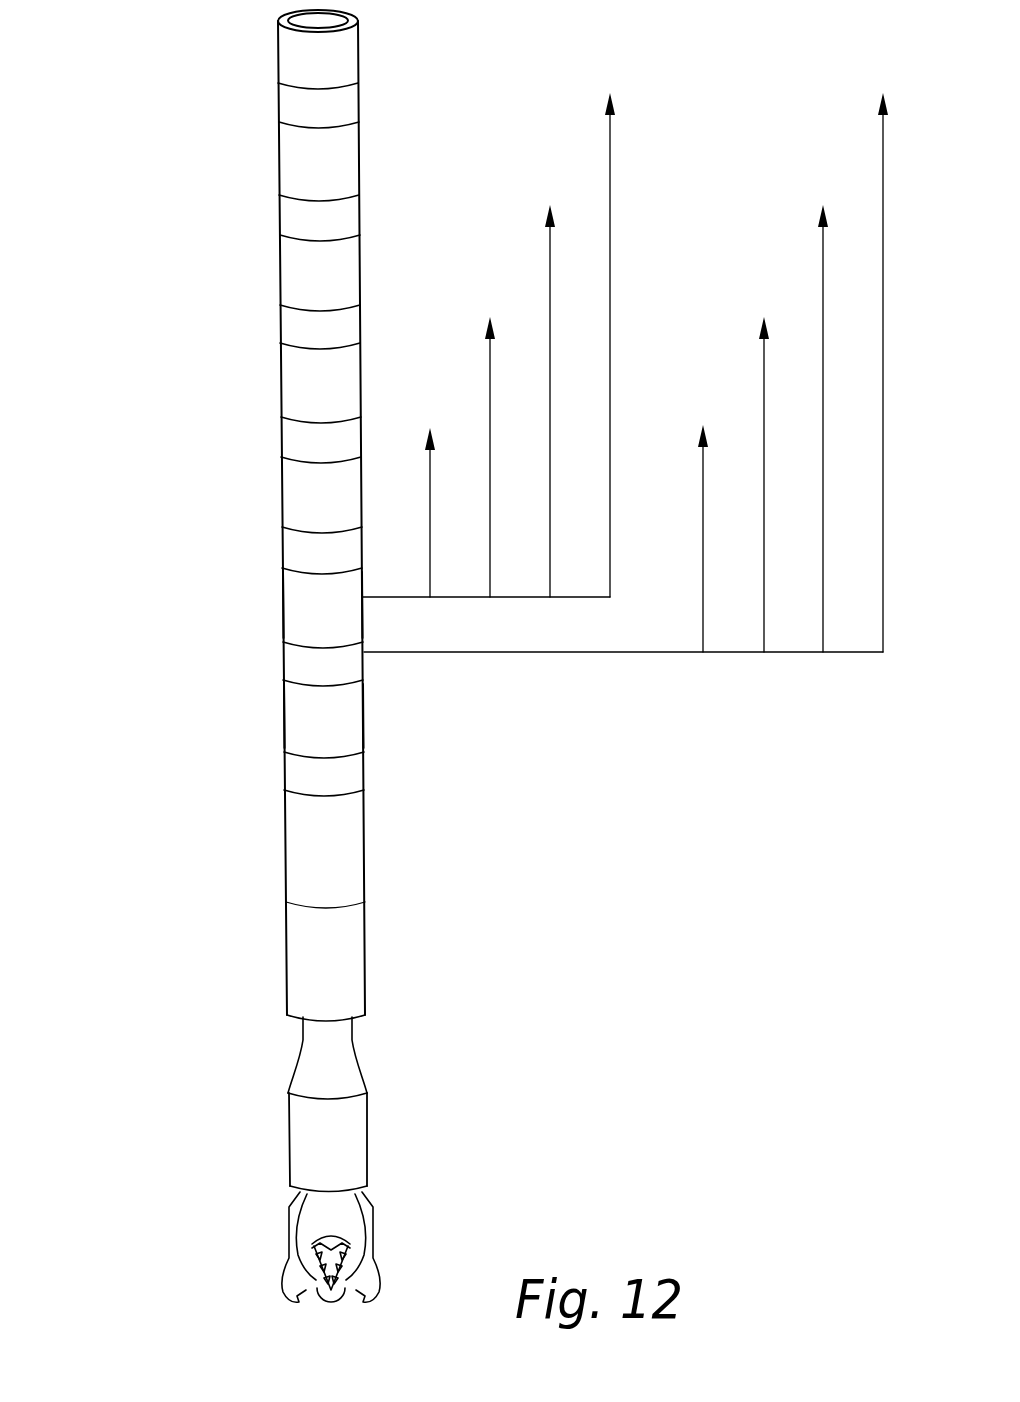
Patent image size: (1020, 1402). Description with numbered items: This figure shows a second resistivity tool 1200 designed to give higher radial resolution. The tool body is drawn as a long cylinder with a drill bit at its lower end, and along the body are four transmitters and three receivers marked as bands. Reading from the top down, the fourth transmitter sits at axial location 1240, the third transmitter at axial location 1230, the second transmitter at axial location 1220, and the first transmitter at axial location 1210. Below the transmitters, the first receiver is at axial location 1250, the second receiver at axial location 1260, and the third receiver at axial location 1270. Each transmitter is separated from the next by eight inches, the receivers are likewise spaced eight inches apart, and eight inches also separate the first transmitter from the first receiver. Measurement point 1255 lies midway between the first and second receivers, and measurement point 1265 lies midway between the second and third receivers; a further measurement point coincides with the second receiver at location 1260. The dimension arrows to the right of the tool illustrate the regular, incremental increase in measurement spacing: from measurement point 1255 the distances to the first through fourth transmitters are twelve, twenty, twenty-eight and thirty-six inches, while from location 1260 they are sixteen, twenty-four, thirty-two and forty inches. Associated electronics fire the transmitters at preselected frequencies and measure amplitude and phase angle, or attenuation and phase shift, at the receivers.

The resistivity tool 1200 is at (142, 160).
The axial location of first transmitter T1 1210 is at (284, 417).
The axial location of second transmitter T2 1220 is at (283, 305).
The axial location of third transmitter T3 1230 is at (282, 195).
The axial location of fourth transmitter T4 1240 is at (281, 84).
The axial location of first receiver R1 1250 is at (285, 527).
The measurement point 1255 is at (285, 578).
The axial location of second receiver R2 1260 is at (286, 642).
The measurement point 1265 is at (286, 693).
The axial location of third receiver R3 1270 is at (287, 752).